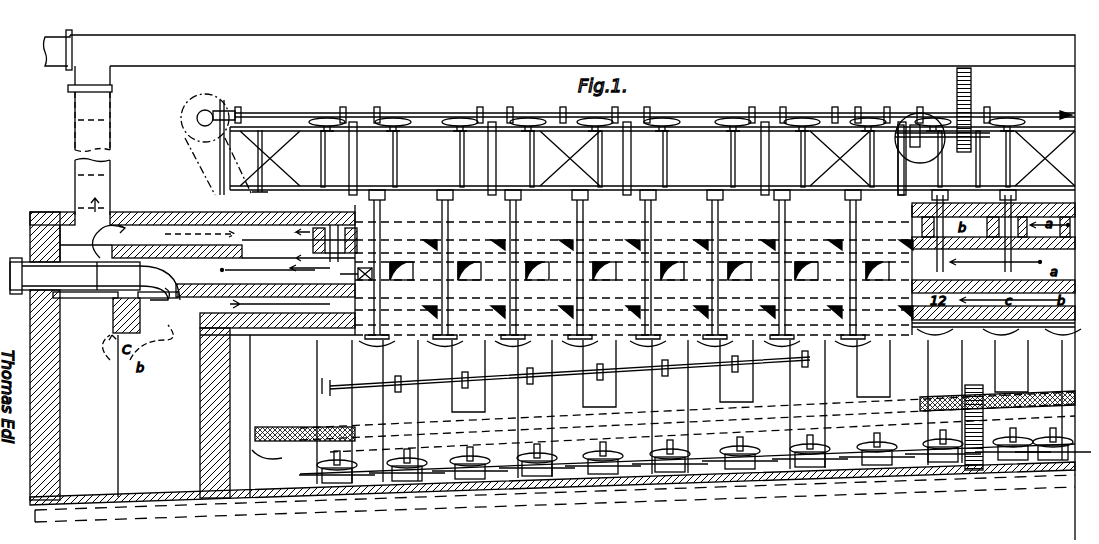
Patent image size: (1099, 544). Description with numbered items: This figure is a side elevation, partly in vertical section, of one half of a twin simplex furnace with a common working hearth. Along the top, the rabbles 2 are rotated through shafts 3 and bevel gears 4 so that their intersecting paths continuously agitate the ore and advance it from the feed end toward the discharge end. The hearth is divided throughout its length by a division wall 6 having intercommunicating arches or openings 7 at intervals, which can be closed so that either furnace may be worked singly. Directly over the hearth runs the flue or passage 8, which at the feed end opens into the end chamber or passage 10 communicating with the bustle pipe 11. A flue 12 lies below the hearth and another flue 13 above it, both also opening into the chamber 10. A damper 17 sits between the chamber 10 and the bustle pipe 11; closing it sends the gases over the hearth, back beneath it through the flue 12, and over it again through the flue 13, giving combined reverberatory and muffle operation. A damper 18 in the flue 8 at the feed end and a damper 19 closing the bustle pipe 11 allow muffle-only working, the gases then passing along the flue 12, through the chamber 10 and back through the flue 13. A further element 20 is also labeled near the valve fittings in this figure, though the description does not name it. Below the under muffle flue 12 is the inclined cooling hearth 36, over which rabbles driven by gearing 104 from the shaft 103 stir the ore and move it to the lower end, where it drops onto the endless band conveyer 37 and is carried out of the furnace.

The rabbles 2 is at (667, 261).
The shafts 3 is at (628, 144).
The bevel gears 4 is at (667, 109).
The division wall 6 is at (125, 289).
The intercommunicating arches or openings 7 is at (629, 275).
The flue or passage 8 is at (603, 284).
The end chamber or passage 10 is at (140, 356).
The bustle pipe 11 is at (92, 122).
The flue 12 is at (265, 309).
The flue 13 is at (207, 243).
The damper 17 is at (85, 300).
The damper 18 is at (160, 300).
The damper 19 is at (106, 187).
The valve 20 is at (356, 267).
The inclined cooling hearth 36 is at (665, 422).
The endless band conveyer 37 is at (267, 448).
The shaft 103 is at (690, 445).
The gearing 104 is at (710, 446).